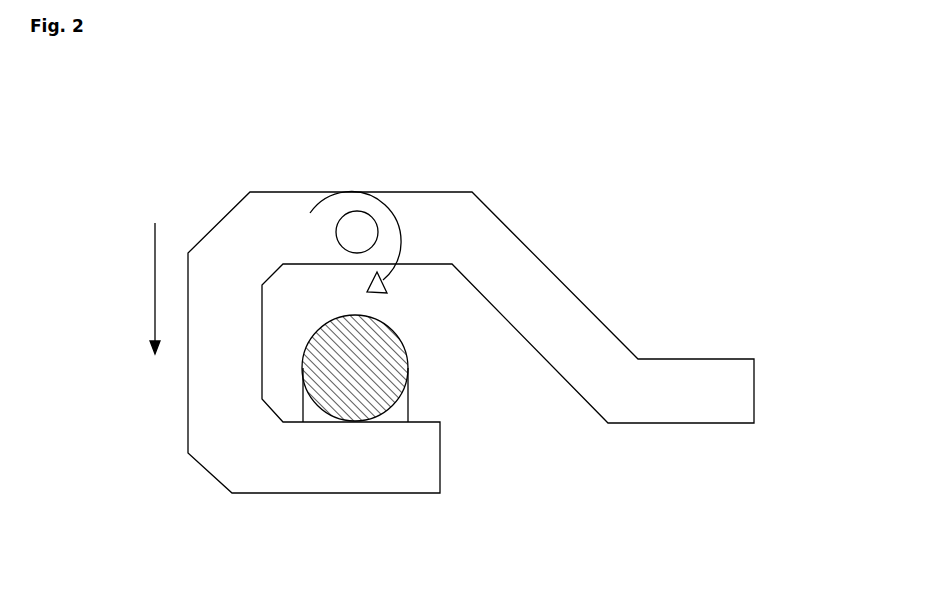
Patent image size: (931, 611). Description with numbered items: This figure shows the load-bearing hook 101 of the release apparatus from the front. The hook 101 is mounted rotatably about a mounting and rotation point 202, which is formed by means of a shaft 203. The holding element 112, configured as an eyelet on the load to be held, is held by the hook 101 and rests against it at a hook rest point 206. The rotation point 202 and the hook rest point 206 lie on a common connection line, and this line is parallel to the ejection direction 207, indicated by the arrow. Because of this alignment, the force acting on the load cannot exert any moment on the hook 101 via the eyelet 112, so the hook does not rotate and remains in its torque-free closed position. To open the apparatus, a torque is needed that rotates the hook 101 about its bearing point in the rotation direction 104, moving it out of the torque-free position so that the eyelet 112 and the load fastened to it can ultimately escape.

The hook 101 is at (272, 212).
The ejection direction 207 is at (155, 272).
The mounting and rotation point 202 is at (357, 232).
The shaft 203 is at (367, 224).
The rotation direction 104 is at (408, 233).
The holding element 112 is at (337, 401).
The hook rest point 206 is at (354, 423).